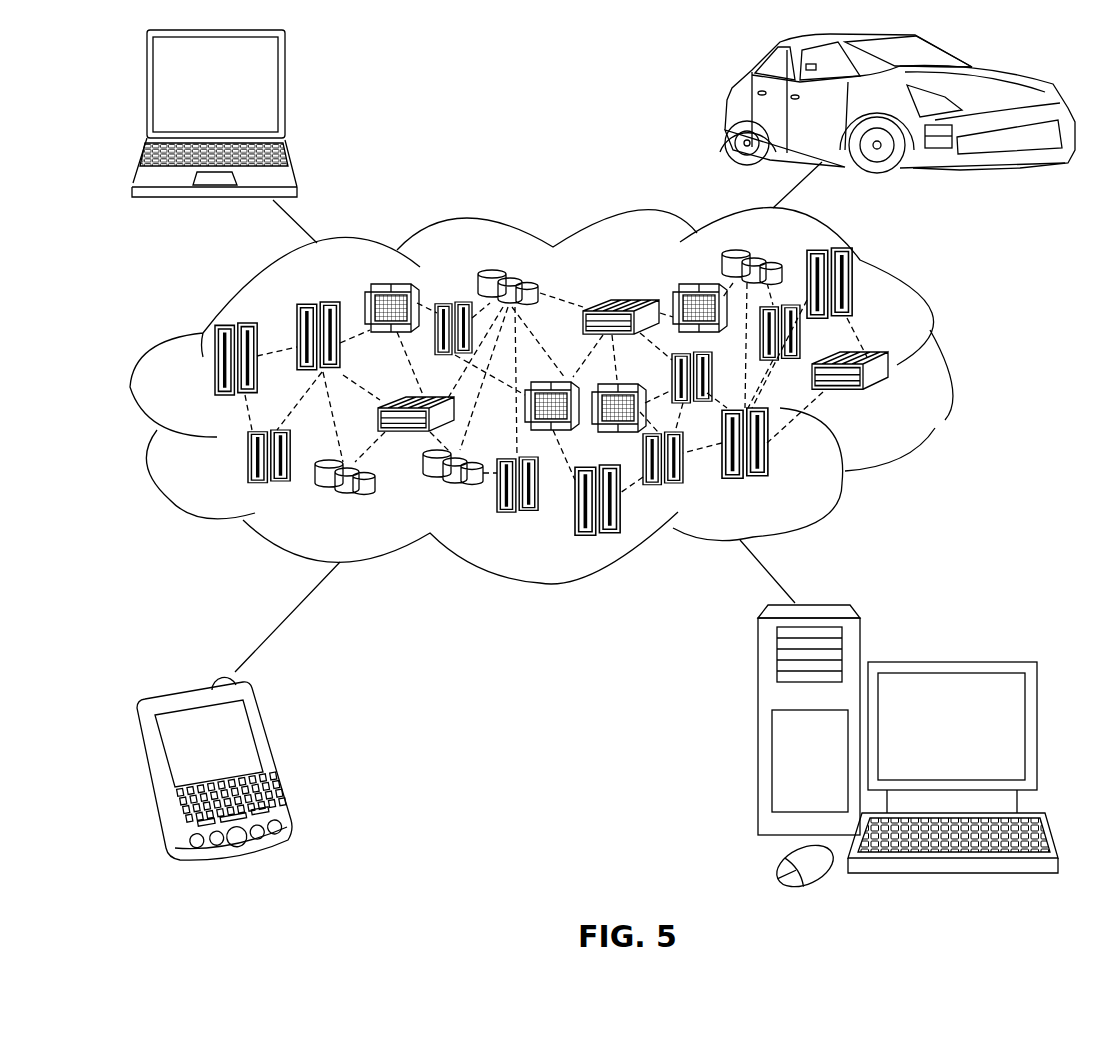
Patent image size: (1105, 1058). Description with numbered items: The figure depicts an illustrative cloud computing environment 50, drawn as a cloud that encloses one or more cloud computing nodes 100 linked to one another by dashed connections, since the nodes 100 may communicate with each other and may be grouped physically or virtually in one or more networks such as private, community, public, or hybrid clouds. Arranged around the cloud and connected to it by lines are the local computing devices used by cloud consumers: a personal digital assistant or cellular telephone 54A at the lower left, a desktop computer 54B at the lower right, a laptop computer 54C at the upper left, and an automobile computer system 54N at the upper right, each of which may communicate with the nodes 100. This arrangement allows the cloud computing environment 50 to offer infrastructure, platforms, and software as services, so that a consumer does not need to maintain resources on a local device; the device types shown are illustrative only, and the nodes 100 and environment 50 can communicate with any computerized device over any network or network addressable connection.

The cloud computing environment 50 is at (950, 368).
The cloud computing nodes 100 is at (888, 399).
The personal digital assistant or cellular telephone 54A is at (272, 757).
The desktop computer 54B is at (950, 661).
The laptop computer 54C is at (287, 92).
The automobile computer system 54N is at (728, 108).